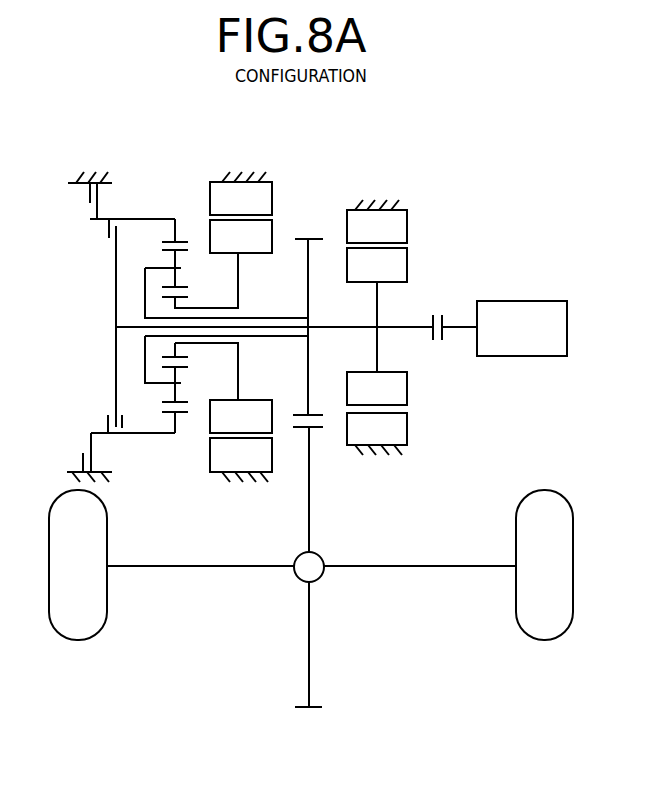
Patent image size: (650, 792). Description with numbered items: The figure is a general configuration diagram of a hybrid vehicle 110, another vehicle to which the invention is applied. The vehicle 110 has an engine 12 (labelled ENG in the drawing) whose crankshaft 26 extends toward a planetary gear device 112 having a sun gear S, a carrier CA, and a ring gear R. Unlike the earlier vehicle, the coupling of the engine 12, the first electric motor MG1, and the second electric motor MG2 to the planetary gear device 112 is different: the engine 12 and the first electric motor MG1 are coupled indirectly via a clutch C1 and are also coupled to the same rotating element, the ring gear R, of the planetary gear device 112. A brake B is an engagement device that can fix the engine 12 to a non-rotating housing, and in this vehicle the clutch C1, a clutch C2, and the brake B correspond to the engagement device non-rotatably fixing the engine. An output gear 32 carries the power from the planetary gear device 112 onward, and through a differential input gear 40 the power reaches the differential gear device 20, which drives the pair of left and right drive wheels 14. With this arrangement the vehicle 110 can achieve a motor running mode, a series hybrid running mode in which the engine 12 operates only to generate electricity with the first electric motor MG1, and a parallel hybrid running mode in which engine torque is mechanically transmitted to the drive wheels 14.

The hybrid vehicle 110 is at (502, 143).
The planetary gear device 112 is at (213, 281).
The brake B is at (84, 192).
The clutch C2 is at (128, 326).
The carrier CA is at (165, 267).
The ring gear R is at (182, 242).
The sun gear S is at (182, 298).
The second electric motor MG2 is at (241, 327).
The output gear 32 is at (309, 238).
The first electric motor MG1 is at (377, 327).
The clutch C1 is at (434, 314).
The crankshaft 26 is at (455, 323).
The engine 12 is at (527, 312).
The engine ENG is at (522, 328).
The differential gear device 20 is at (302, 569).
The drive wheels 14 is at (75, 623).
The differential input gear 40 is at (312, 709).